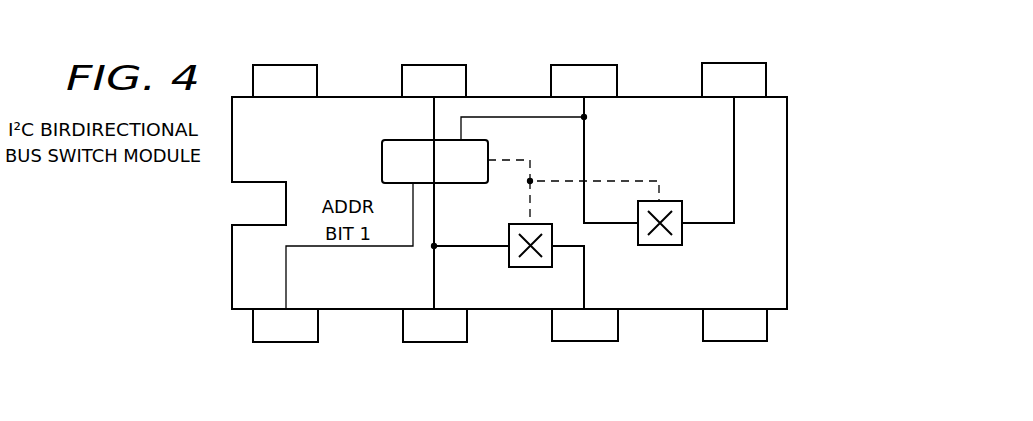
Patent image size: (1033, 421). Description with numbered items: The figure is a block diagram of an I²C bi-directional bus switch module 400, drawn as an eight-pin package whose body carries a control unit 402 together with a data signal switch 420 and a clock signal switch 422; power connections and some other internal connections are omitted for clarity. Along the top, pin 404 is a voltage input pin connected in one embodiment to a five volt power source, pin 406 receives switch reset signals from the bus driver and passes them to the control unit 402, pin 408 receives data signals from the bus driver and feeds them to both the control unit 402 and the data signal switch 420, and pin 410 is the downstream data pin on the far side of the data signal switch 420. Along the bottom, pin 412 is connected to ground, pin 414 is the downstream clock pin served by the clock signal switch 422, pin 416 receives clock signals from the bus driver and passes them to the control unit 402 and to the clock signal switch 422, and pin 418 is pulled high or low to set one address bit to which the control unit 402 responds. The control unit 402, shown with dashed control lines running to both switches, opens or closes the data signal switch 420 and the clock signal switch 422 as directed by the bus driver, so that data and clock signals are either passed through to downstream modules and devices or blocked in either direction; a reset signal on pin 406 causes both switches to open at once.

The I²C bi-directional bus switch module 400 is at (150, 192).
The control unit 402 is at (381, 160).
The pin 404 is at (283, 64).
The pin 406 is at (432, 64).
The pin 408 is at (584, 64).
The pin 410 is at (733, 62).
The pin 412 is at (735, 342).
The pin 414 is at (584, 342).
The pin 416 is at (434, 343).
The pin 418 is at (286, 343).
The data signal switch 420 is at (660, 246).
The clock signal switch 422 is at (509, 258).